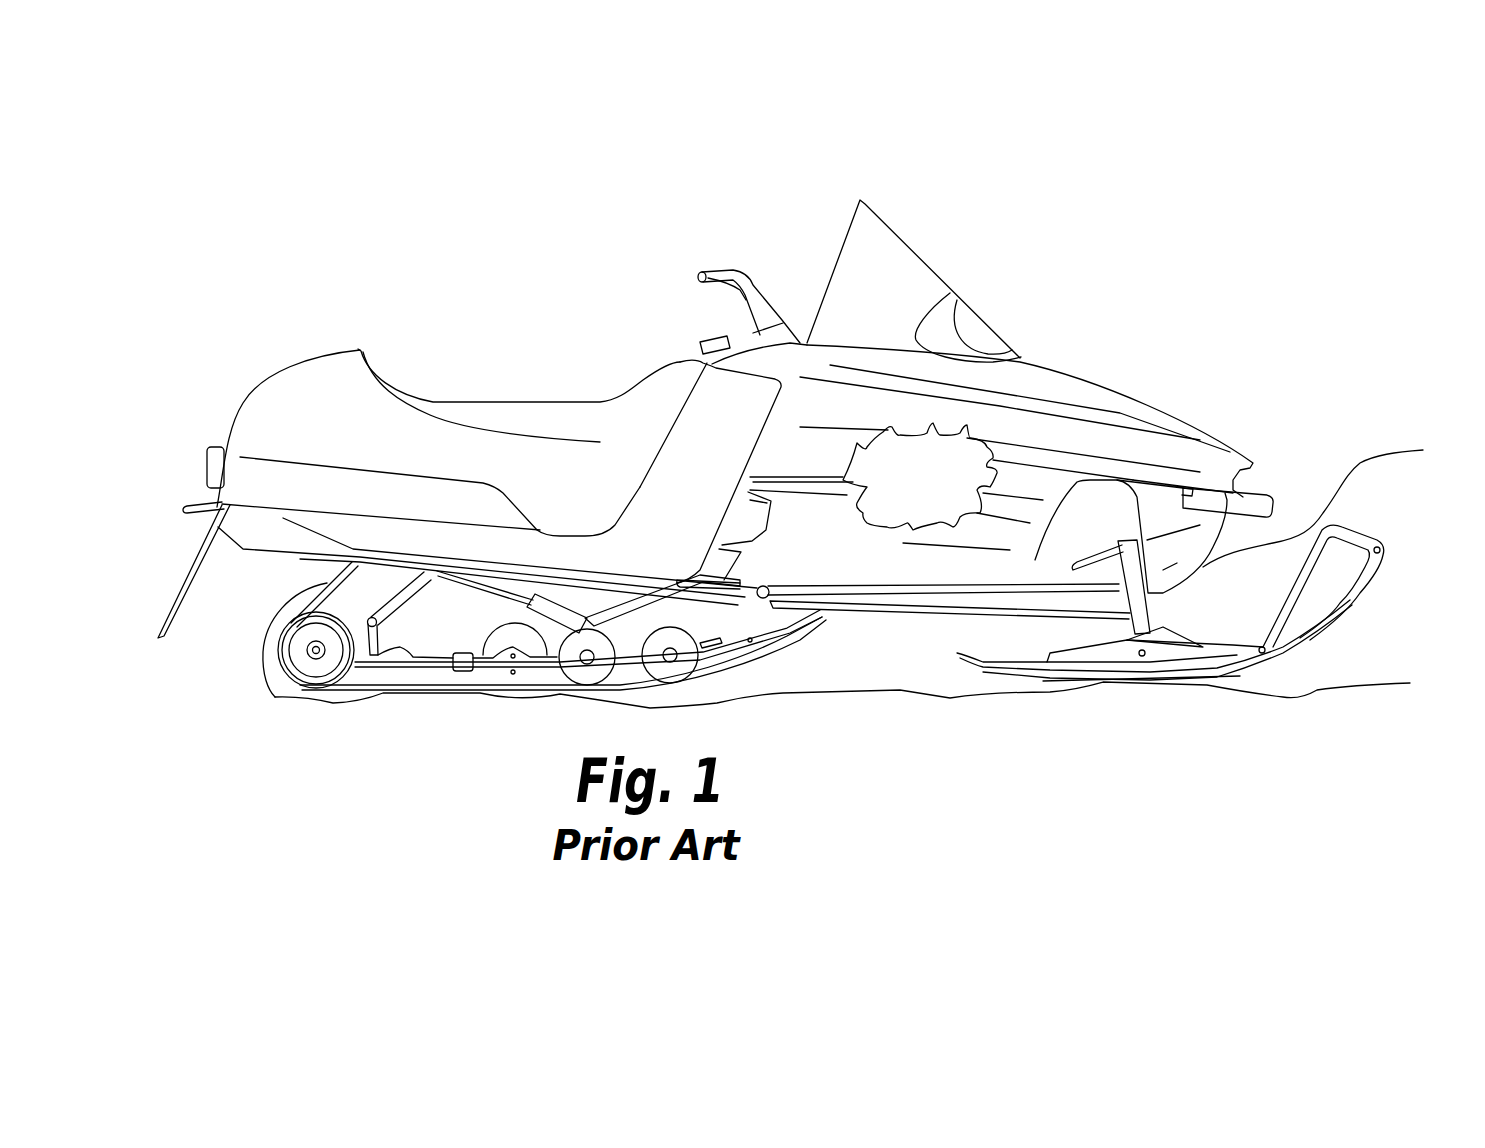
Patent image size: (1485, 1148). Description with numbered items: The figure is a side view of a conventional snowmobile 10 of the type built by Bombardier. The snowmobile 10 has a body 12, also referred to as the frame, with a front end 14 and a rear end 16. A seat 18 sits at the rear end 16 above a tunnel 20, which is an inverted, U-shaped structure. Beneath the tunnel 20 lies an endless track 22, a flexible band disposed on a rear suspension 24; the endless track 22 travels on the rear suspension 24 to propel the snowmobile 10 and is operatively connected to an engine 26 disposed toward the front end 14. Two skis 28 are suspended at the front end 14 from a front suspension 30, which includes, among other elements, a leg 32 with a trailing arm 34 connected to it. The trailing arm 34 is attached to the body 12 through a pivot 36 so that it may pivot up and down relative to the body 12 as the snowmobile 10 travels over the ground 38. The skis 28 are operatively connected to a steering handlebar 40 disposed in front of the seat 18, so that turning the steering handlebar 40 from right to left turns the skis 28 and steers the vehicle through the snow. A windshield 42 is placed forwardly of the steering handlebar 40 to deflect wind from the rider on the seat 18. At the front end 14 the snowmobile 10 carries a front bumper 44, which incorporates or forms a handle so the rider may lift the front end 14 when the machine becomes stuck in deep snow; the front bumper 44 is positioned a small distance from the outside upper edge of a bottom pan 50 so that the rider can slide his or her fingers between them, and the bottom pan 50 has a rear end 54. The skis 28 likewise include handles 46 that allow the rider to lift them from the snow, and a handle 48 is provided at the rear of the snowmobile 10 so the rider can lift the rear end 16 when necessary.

The snowmobile 10 is at (1140, 387).
The body 12 is at (823, 557).
The front end 14 is at (1243, 447).
The rear end 16 is at (246, 403).
The seat 18 is at (512, 417).
The tunnel 20 is at (263, 527).
The endless track 22 is at (262, 635).
The rear suspension 24 is at (412, 595).
The engine 26 is at (920, 476).
The skis 28 is at (1223, 657).
The front suspension 30 is at (1172, 600).
The leg 32 is at (1135, 614).
The trailing arm 34 is at (967, 602).
The pivot 36 is at (767, 600).
The ground 38 is at (325, 700).
The steering handlebar 40 is at (767, 281).
The windshield 42 is at (917, 287).
The front bumper 44 is at (1272, 497).
The handles 46 is at (1357, 533).
The handle 48 is at (185, 510).
The bottom pan 50 is at (866, 571).
The rear end of the bottom pan 54 is at (757, 442).